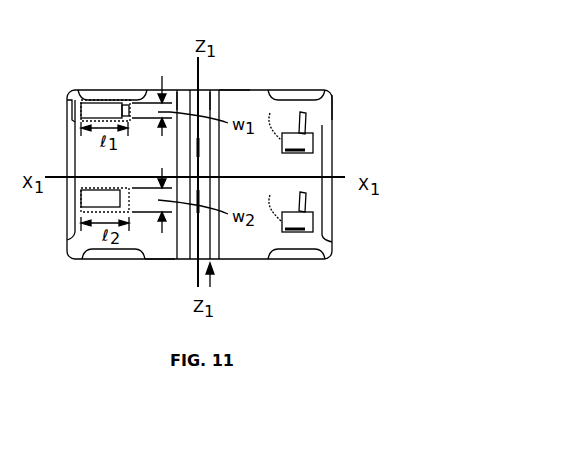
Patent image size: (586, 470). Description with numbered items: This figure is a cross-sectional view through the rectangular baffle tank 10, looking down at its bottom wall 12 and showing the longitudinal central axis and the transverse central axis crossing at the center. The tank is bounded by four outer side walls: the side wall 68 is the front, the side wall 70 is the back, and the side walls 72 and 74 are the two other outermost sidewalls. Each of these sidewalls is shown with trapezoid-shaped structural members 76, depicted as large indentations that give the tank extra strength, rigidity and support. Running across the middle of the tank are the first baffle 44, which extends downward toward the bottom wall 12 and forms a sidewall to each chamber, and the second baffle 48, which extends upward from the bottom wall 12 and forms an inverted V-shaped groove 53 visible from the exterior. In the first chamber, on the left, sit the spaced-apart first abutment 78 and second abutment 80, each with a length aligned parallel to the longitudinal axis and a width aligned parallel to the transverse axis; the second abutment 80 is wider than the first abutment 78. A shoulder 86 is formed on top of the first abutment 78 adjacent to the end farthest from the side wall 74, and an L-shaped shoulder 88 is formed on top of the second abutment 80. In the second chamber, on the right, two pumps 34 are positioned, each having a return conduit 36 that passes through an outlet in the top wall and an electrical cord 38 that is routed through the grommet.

The baffle tank 10 is at (326, 47).
The bottom wall 12 is at (169, 164).
The pump 34 is at (297, 182).
The return conduit 36 is at (306, 121).
The electrical cord 38 is at (283, 130).
The first baffle 44 is at (181, 93).
The second baffle 48 is at (213, 95).
The inverted V-shaped groove 53 is at (214, 280).
The side wall 68 is at (160, 260).
The side wall 70 is at (232, 91).
The side wall 72 is at (333, 102).
The side wall 74 is at (68, 105).
The structural member 76 is at (104, 94).
The first abutment 78 is at (125, 125).
The second abutment 80 is at (104, 180).
The shoulder 86 is at (128, 110).
The L-shaped shoulder 88 is at (162, 200).